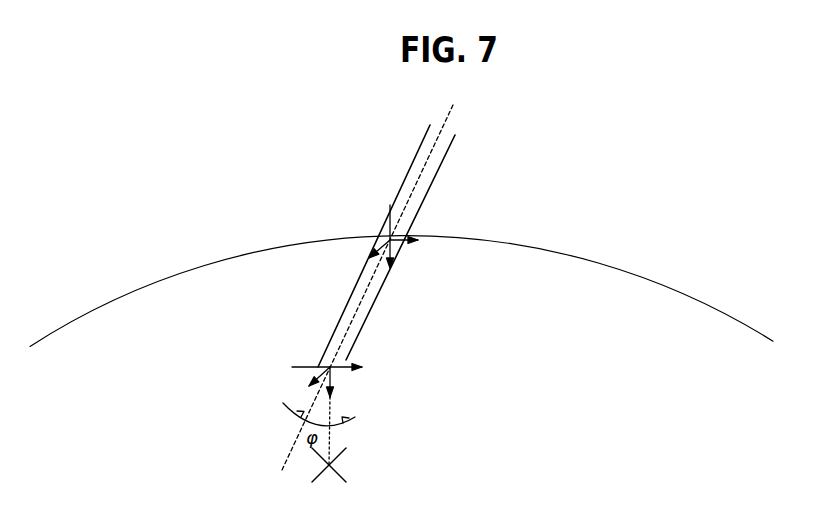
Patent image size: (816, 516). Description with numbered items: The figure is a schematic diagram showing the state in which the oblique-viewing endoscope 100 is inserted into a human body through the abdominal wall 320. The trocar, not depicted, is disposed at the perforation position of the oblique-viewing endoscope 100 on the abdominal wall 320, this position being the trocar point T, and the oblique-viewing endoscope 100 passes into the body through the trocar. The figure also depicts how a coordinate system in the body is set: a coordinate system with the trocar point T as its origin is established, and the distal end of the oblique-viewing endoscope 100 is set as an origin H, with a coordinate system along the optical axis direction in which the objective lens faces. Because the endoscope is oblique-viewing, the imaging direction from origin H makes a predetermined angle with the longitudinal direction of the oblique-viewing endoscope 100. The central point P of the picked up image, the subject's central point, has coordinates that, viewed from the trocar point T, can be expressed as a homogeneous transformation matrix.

The oblique-viewing endoscope 100 is at (410, 168).
The abdominal wall 320 is at (623, 268).
The trocar point T is at (402, 246).
The origin H is at (343, 373).
The central point of picked up image P is at (340, 463).